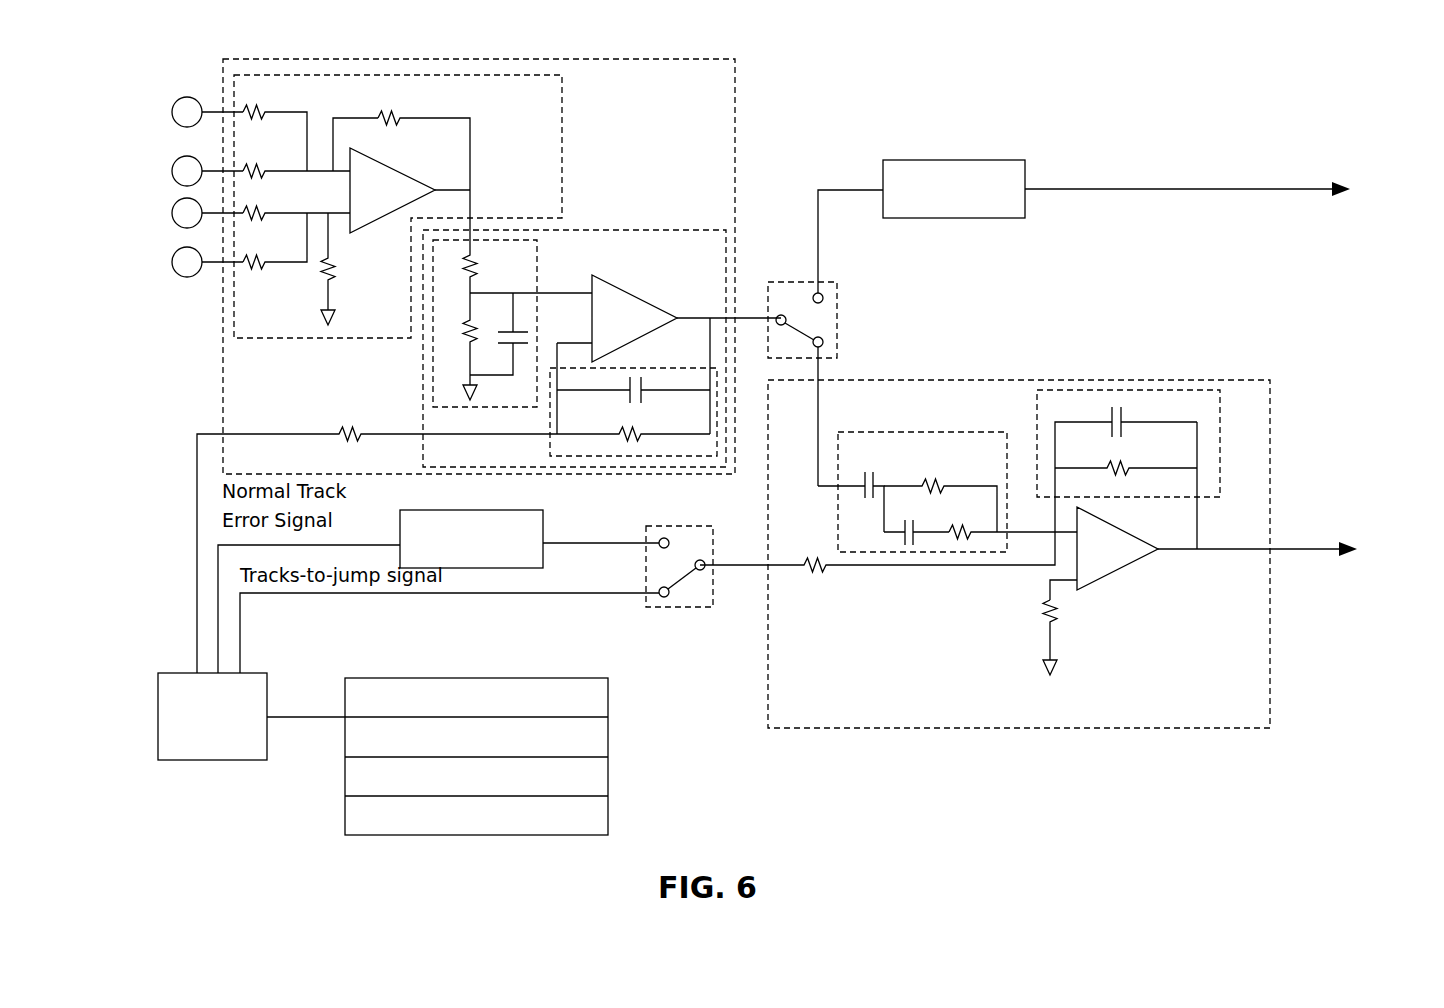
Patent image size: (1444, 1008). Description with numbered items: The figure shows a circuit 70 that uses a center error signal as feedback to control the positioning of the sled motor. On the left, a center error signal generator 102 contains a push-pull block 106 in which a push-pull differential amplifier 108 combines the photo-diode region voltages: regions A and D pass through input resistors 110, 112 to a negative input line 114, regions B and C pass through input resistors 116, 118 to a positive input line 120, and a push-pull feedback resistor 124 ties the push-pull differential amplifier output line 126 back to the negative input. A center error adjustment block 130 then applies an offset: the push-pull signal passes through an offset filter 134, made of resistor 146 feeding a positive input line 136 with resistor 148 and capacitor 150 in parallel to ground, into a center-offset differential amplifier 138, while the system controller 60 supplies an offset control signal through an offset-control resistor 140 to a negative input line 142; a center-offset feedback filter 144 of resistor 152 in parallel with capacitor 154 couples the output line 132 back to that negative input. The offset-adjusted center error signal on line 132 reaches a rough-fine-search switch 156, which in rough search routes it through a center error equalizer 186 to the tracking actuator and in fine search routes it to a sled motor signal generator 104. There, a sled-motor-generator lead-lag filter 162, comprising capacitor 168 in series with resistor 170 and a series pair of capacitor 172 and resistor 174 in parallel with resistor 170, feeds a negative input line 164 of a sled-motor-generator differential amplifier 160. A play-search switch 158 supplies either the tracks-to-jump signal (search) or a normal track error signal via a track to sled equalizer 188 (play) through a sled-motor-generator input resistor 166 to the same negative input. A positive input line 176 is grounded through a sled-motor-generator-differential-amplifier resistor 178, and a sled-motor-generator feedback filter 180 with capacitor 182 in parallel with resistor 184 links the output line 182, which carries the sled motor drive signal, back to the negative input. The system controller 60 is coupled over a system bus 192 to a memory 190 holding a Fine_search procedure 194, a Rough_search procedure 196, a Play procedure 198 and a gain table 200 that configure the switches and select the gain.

The circuit 70 is at (190, 85).
The system controller 60 is at (261, 673).
The center error signal generator 102 is at (735, 92).
The sled motor signal generator 104 is at (1217, 380).
The push-pull block 106 is at (562, 116).
The push-pull differential amplifier 108 is at (394, 170).
The input resistor 110 is at (251, 111).
The input resistor 112 is at (253, 163).
The negative input line 114 is at (332, 128).
The input resistor 116 is at (254, 211).
The input resistor 118 is at (254, 258).
The positive input line 120 is at (337, 210).
The push-pull feedback resistor 124 is at (384, 113).
The push-pull differential amplifier output line 126 is at (335, 268).
The center error adjustment block 130 is at (674, 230).
The output line 132 is at (740, 315).
The offset filter 134 is at (541, 266).
The positive input line 136 is at (560, 292).
The center-offset differential amplifier 138 is at (634, 300).
The offset-control resistor 140 is at (351, 422).
The negative input line 142 is at (559, 338).
The center-offset feedback filter 144 is at (672, 368).
The resistor 146 is at (479, 270).
The resistor 148 is at (466, 333).
The capacitor 150 is at (511, 328).
The resistor 152 is at (617, 426).
The capacitor 154 is at (645, 394).
The rough-fine-search switch 156 is at (834, 282).
The play-search switch 158 is at (687, 526).
The sled-motor-generator differential amplifier 160 is at (1120, 528).
The sled-motor-generator lead-lag filter 162 is at (957, 432).
The negative input line 164 is at (1036, 526).
The sled-motor-generator input resistor 166 is at (804, 551).
The capacitor 168 is at (870, 473).
The resistor 170 is at (932, 480).
The capacitor 172 is at (904, 518).
The resistor 174 is at (960, 520).
The positive input line 176 is at (1040, 584).
The sled-motor-generator-differential-amplifier resistor 178 is at (1056, 619).
The sled-motor-generator feedback filter 180 is at (1219, 428).
The output line 182 is at (1127, 417).
The resistor 184 is at (1125, 467).
The center error equalizer 186 is at (1008, 160).
The track to sled equalizer 188 is at (529, 510).
The memory 190 is at (362, 678).
The system bus 192 is at (291, 714).
The Fine_search procedure 194 is at (612, 702).
The Rough_search procedure 196 is at (612, 740).
The Play procedure 198 is at (612, 782).
The gain table 200 is at (612, 820).